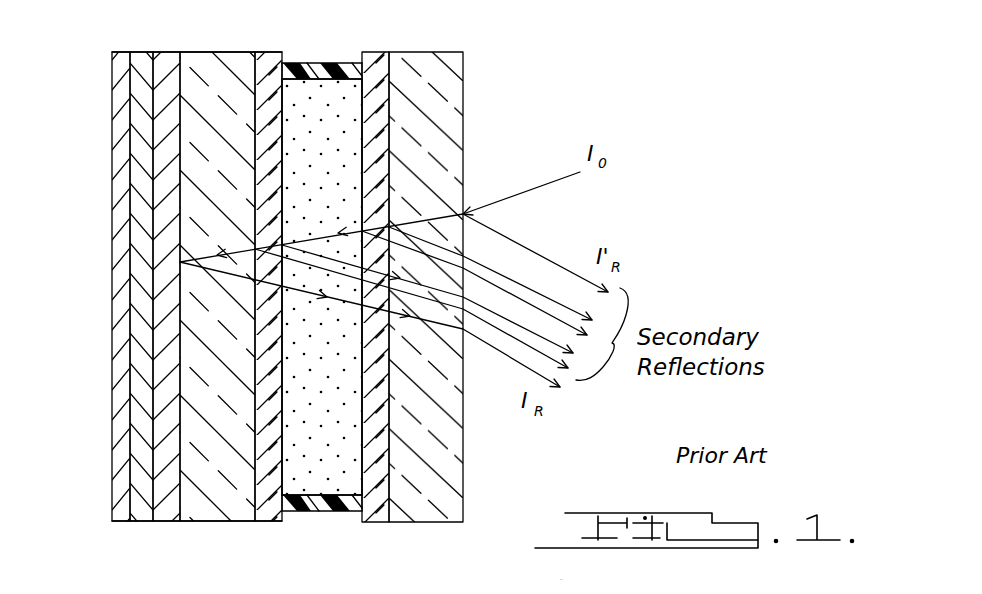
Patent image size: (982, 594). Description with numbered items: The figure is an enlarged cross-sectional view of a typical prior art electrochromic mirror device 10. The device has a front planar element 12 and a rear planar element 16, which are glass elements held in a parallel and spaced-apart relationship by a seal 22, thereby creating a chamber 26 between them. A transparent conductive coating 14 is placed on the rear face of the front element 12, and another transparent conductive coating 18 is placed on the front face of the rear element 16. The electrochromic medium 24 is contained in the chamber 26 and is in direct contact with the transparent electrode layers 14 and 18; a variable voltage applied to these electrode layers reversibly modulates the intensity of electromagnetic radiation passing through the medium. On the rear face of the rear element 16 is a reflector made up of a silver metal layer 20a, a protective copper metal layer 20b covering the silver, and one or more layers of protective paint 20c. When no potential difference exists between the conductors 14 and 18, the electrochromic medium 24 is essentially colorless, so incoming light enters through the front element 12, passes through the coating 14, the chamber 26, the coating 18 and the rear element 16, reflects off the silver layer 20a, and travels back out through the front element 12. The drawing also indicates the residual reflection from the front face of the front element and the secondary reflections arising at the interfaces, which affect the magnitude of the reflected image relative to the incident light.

The electrochromic mirror device 10 is at (632, 104).
The front planar element 12 is at (443, 80).
The transparent conductive coating 14 is at (375, 77).
The rear planar element 16 is at (193, 498).
The transparent conductive coating 18 is at (267, 503).
The silver metal layer 20a is at (167, 62).
The protective copper metal layer 20b is at (145, 58).
The protective paint 20c is at (117, 103).
The seal 22 is at (297, 67).
The electrochromic medium 24 is at (333, 481).
The chamber 26 is at (345, 449).